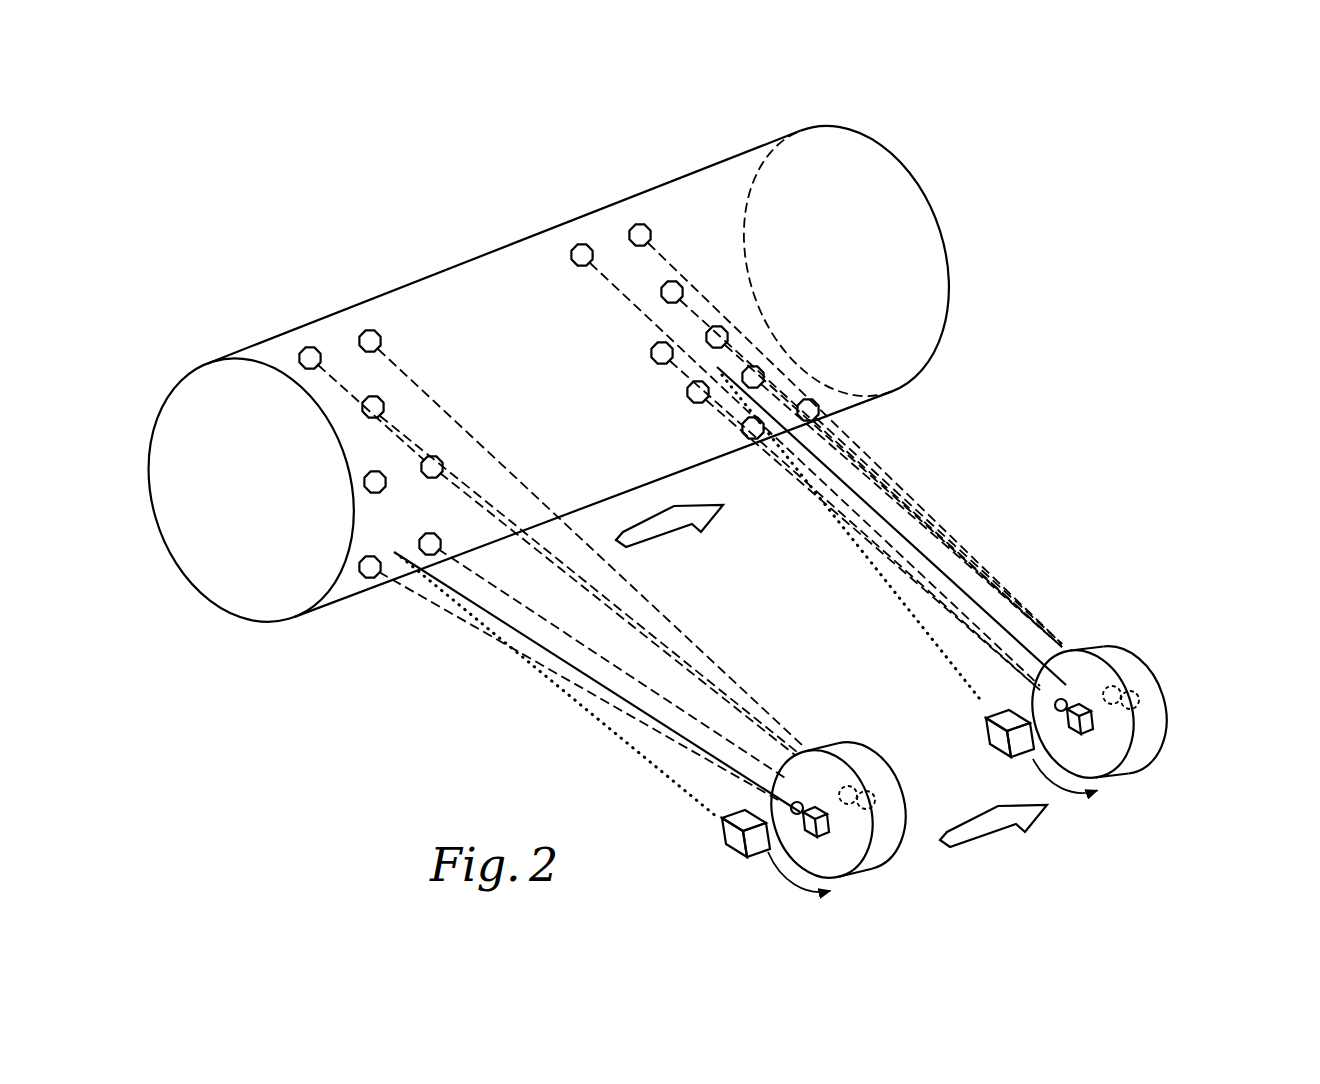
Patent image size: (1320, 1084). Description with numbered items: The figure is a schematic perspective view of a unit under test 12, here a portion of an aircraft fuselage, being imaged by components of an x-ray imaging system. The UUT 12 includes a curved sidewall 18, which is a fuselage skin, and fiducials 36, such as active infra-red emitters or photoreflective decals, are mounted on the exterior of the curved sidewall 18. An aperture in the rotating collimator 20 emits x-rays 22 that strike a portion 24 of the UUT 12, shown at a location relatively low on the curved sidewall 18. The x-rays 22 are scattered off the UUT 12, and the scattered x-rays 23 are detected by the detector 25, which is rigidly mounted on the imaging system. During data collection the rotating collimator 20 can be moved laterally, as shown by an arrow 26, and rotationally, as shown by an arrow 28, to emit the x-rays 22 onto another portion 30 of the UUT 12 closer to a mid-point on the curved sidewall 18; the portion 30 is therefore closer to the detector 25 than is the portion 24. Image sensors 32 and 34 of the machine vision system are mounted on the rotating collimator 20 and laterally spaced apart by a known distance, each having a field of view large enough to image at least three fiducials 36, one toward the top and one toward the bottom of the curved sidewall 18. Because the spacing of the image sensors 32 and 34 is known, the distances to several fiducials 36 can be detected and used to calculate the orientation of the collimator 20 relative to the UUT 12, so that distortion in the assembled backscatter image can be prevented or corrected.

The unit under test 12 is at (533, 384).
The curved sidewall 18 is at (442, 297).
The rotating collimator 20 is at (853, 726).
The x-rays 22 is at (622, 690).
The scattered x-rays 23 is at (630, 753).
The portion 24 is at (388, 527).
The detector 25 is at (723, 838).
The arrow 26 is at (672, 533).
The arrow 28 is at (787, 878).
The portion 30 is at (727, 358).
The image sensor 32 is at (838, 842).
The image sensor 34 is at (884, 796).
The fiducials 36 is at (594, 243).